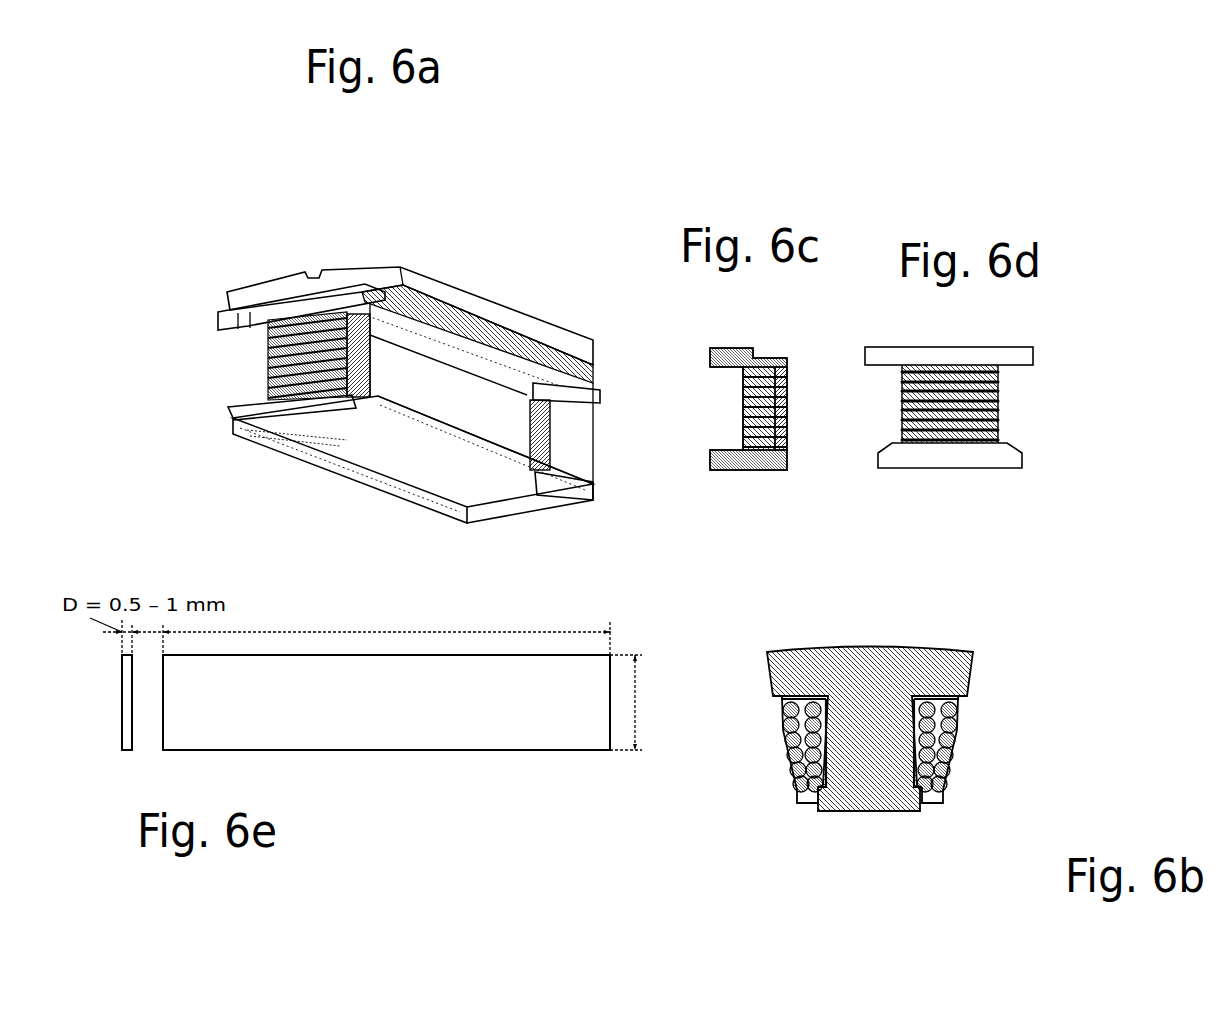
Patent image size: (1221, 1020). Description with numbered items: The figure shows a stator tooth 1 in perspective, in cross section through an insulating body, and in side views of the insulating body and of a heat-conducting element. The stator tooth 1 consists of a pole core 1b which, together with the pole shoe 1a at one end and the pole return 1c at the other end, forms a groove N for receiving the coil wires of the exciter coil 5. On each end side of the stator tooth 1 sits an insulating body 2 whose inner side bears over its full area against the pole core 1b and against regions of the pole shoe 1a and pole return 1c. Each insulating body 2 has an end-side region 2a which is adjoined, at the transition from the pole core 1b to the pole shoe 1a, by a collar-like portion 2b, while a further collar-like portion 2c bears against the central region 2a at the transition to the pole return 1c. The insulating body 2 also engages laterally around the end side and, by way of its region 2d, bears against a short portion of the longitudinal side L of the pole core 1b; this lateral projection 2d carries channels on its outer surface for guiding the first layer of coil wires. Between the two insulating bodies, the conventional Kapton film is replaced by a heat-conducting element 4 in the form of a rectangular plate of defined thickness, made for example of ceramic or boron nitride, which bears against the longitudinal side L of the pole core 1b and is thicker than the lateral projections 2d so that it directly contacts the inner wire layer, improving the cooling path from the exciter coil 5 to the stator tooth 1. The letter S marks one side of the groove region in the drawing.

In FIG. 6A, the stator tooth 1 is at (310, 253).
In FIG. 6B, the stator tooth 1 is at (843, 620).
In FIG. 6A, the pole shoe 1a is at (375, 278).
In FIG. 6B, the pole shoe 1a is at (893, 660).
In FIG. 6B, the pole core 1b is at (887, 773).
In FIG. 6A, the pole return 1c is at (395, 470).
In FIG. 6B, the pole return 1c is at (870, 811).
In FIG. 6A, the insulating body 2 is at (280, 420).
In FIG. 6C, the insulating body 2 is at (727, 348).
In FIG. 6D, the insulating body 2 is at (940, 357).
In FIG. 6B, the insulating body 2 is at (930, 807).
In FIG. 6A, the end-side region 2a is at (265, 378).
In FIG. 6C, the end-side region 2a is at (733, 388).
In FIG. 6D, the end-side region 2a is at (985, 400).
In FIG. 6B, the end-side region 2a is at (795, 745).
In FIG. 6A, the collar-like portion 2b is at (215, 318).
In FIG. 6C, the collar-like portion 2b is at (715, 352).
In FIG. 6D, the collar-like portion 2b is at (1018, 352).
In FIG. 6B, the collar-like portion 2b is at (975, 670).
In FIG. 6A, the collar-like portion 2c is at (247, 430).
In FIG. 6C, the collar-like portion 2c is at (748, 460).
In FIG. 6D, the collar-like portion 2c is at (995, 462).
In FIG. 6B, the collar-like portion 2c is at (805, 806).
In FIG. 6A, the lateral projection 2d is at (560, 428).
In FIG. 6C, the lateral projection 2d is at (743, 407).
In FIG. 6D, the lateral projection 2d is at (1000, 420).
In FIG. 6B, the lateral projection 2d is at (870, 743).
In FIG. 6A, the heat-conducting element 4 is at (465, 385).
In FIG. 6E, the heat-conducting element 4 is at (462, 713).
In FIG. 6B, the exciter coil 5 is at (935, 740).
In FIG. 6A, the south pole S is at (262, 290).
In FIG. 6A, the groove N is at (565, 455).
In FIG. 6D, the groove N is at (890, 408).
In FIG. 6B, the groove N is at (945, 780).
In FIG. 6A, the longitudinal side L is at (510, 313).